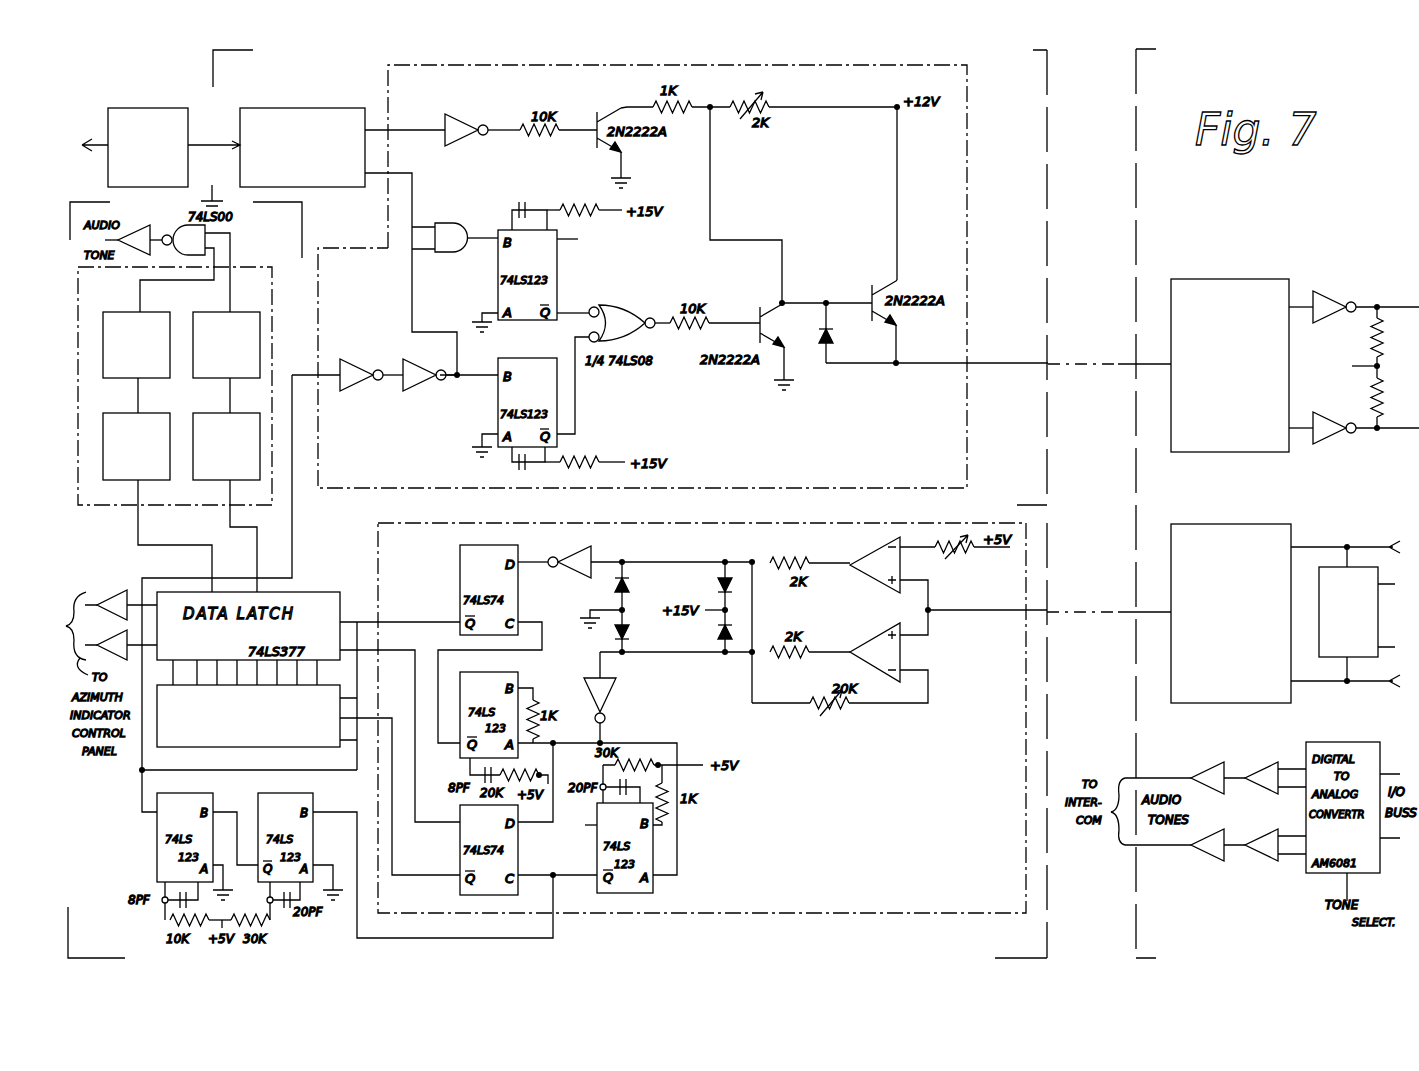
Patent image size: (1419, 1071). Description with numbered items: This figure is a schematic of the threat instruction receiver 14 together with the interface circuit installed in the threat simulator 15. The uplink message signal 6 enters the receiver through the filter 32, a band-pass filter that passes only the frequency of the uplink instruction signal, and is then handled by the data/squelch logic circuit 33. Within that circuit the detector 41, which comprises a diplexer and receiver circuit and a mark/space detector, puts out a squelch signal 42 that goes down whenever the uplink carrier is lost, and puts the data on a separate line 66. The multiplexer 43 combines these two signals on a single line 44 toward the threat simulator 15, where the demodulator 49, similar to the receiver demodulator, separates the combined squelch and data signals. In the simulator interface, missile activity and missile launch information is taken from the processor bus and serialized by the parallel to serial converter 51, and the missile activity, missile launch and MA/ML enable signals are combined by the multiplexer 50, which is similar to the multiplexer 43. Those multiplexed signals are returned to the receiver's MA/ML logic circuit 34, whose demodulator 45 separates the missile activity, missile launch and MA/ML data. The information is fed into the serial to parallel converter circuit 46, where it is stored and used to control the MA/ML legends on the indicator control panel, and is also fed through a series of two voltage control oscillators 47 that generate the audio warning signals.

The uplink message signal 6 is at (95, 135).
The filter 32 is at (186, 123).
The detector 41 is at (292, 108).
The squelch signal 42 is at (378, 132).
The data line 66 is at (378, 176).
The voltage control oscillators 47 is at (255, 268).
The multiplexer 43 is at (957, 155).
The data/squelch logic circuit 33 is at (1047, 333).
The single line 44 is at (985, 365).
The MA/ML logic circuit 34 is at (1047, 578).
The threat instruction receiver 14 is at (1055, 902).
The threat simulator 15 is at (1136, 912).
The demodulator 45 is at (686, 916).
The serial to parallel converter circuit 46 is at (212, 749).
The demodulator 49 is at (1197, 281).
The multiplexer 50 is at (1197, 526).
The parallel to serial converter 51 is at (1373, 568).